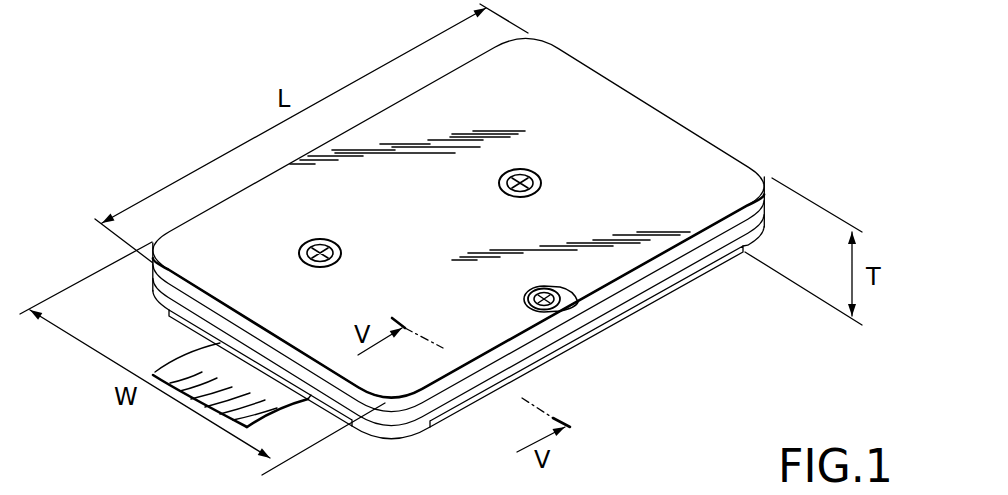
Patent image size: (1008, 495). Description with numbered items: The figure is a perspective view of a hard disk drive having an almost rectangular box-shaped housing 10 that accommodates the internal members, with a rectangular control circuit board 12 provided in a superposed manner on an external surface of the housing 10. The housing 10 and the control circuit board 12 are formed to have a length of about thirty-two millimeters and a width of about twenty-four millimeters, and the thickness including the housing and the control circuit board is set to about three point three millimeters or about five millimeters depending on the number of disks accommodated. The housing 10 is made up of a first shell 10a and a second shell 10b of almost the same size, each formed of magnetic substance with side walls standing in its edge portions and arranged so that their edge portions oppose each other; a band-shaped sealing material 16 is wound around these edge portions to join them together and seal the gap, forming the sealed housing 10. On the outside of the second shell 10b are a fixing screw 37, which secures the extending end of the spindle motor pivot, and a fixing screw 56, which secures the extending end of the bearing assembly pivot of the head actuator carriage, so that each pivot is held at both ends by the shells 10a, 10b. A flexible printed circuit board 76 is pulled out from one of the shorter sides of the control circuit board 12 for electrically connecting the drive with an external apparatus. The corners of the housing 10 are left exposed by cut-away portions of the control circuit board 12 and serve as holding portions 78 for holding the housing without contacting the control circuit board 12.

The housing 10 is at (456, 240).
The first shell 10a is at (720, 257).
The second shell 10b is at (683, 135).
The control circuit board 12 is at (577, 350).
The sealing material 16 is at (642, 285).
The fixing screw 37 is at (538, 172).
The fixing screw 56 is at (322, 242).
The flexible printed circuit board 76 is at (187, 370).
The holding portions 78 is at (150, 292).